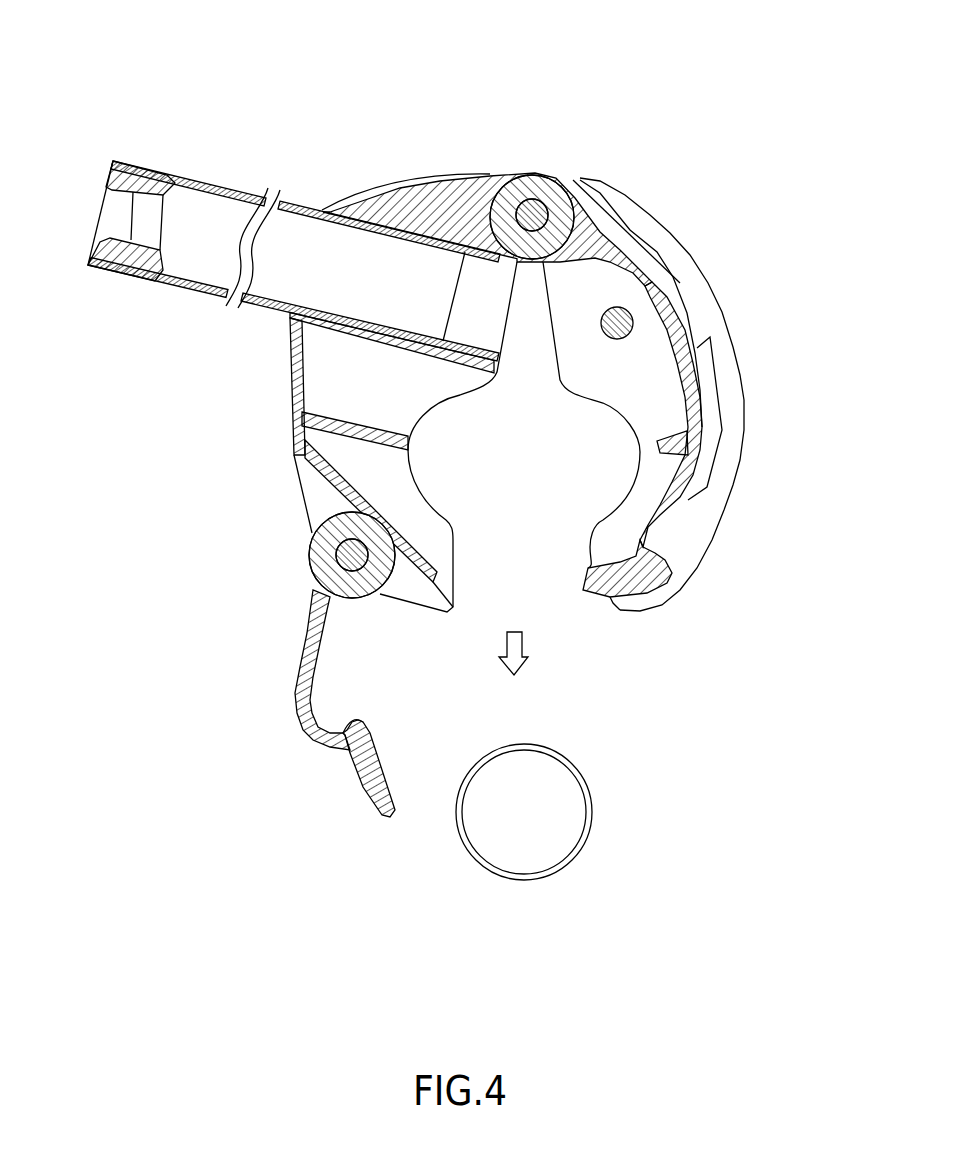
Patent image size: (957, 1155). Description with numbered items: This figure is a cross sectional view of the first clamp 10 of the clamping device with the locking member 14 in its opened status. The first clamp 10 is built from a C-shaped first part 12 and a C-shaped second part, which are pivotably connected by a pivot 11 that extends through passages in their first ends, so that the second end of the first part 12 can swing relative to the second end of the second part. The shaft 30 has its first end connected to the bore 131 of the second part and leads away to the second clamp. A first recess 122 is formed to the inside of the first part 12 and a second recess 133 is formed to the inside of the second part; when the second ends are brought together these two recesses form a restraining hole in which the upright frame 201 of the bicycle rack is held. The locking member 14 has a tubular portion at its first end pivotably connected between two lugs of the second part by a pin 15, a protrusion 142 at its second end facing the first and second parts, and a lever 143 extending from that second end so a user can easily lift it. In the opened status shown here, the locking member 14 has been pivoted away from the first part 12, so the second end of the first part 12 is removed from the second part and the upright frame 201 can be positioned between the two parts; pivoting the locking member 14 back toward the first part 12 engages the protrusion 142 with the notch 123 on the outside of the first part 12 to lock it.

The first clamp 10 is at (450, 86).
The pivot 11 is at (538, 205).
The first part 12 is at (700, 270).
The first recess 122 is at (657, 441).
The notch 123 is at (657, 537).
The socket portion of body 131 is at (374, 194).
The second recess 133 is at (408, 434).
The locking member 14 is at (305, 633).
The protrusion 142 is at (352, 723).
The lever 143 is at (368, 783).
The pin 15 is at (312, 533).
The shaft 30 is at (240, 190).
The upright frame 201 is at (593, 813).